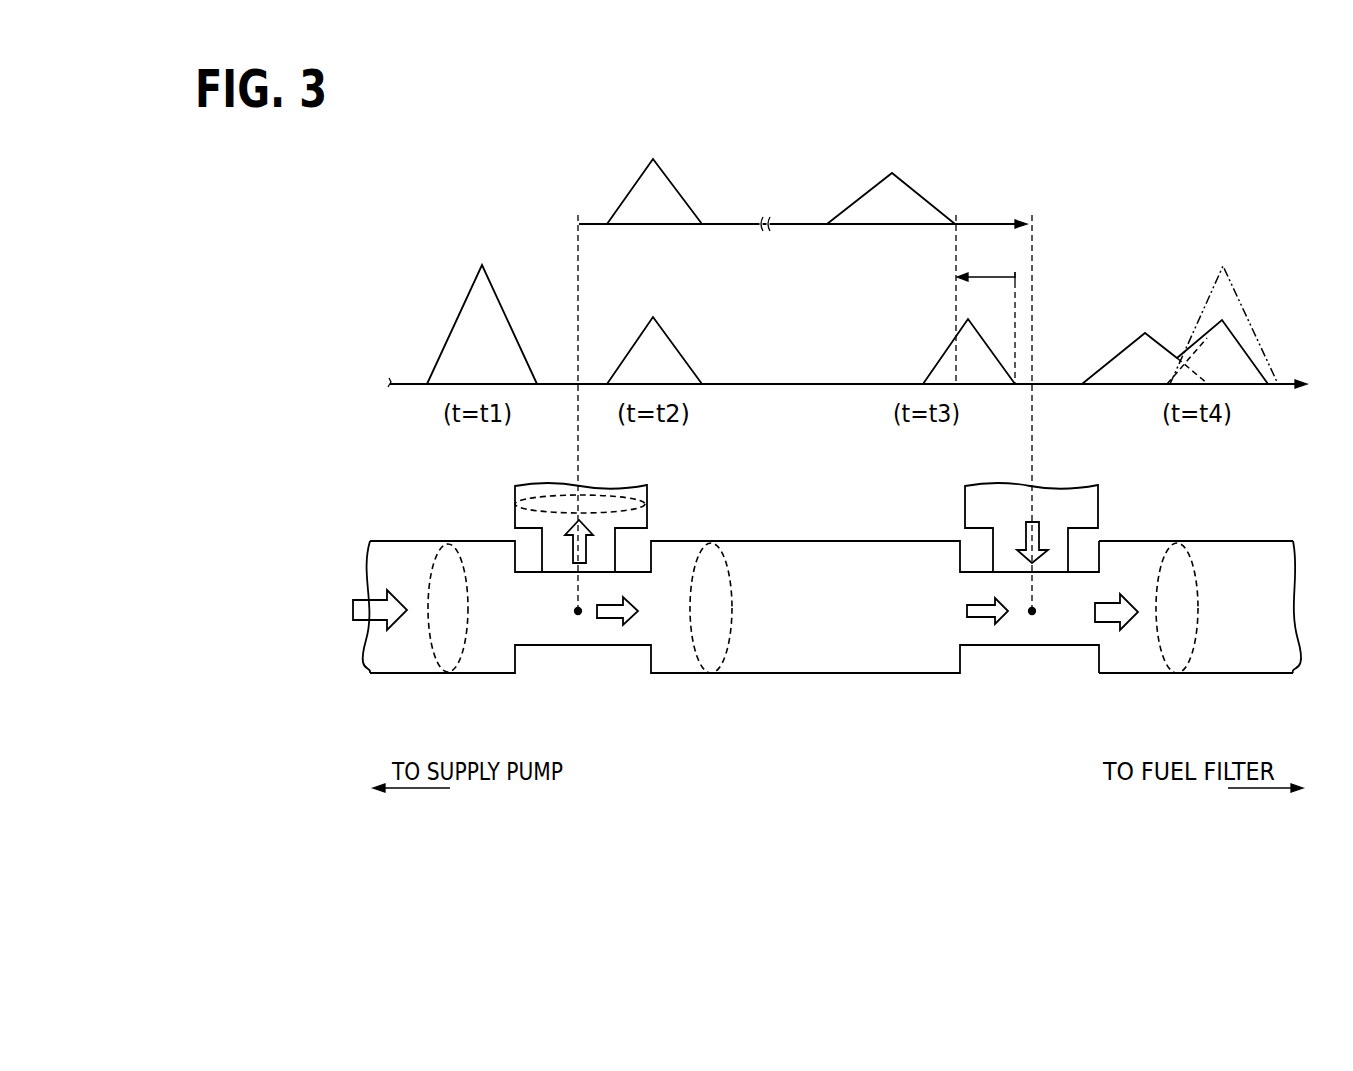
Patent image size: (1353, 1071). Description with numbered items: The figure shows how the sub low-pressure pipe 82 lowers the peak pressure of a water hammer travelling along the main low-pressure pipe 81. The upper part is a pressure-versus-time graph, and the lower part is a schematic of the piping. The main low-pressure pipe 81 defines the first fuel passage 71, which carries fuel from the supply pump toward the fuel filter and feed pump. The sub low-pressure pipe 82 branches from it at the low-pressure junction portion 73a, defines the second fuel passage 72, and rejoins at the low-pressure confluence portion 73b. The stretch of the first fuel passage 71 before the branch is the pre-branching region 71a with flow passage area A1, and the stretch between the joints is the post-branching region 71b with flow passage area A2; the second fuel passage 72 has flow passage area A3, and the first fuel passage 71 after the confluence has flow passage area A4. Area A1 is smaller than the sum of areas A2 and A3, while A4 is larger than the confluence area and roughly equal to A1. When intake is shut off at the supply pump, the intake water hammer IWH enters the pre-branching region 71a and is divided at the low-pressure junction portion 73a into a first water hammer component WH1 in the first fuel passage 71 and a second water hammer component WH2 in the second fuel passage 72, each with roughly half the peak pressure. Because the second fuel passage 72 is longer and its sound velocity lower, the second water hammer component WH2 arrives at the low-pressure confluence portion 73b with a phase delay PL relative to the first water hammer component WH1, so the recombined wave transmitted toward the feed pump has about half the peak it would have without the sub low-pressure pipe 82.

The first fuel passage 71 is at (800, 385).
The second fuel passage 72 is at (794, 227).
The pre-branching region 71a is at (493, 675).
The post-branching region 71b is at (633, 645).
The low-pressure junction portion 73a is at (574, 624).
The low-pressure confluence portion 73b is at (1027, 623).
The main low-pressure pipe 81 is at (1207, 540).
The sub low-pressure pipe 82 is at (965, 490).
The intake water hammer IWH is at (492, 287).
The first water hammer component WH1 is at (672, 337).
The second water hammer component WH2 is at (672, 182).
The phase delay PL is at (982, 274).
The flow passage area in the pre-branching region A1 is at (430, 668).
The flow passage area in the post-branching region A2 is at (697, 673).
The flow passage area of the second fuel passage A3 is at (517, 502).
The flow passage area after confluence A4 is at (1163, 673).